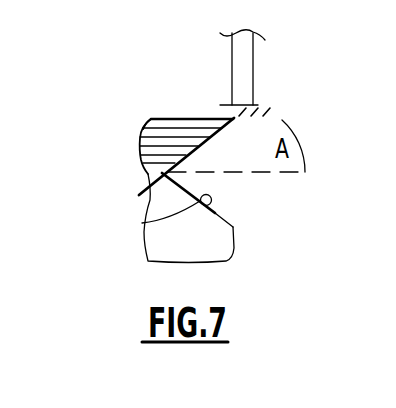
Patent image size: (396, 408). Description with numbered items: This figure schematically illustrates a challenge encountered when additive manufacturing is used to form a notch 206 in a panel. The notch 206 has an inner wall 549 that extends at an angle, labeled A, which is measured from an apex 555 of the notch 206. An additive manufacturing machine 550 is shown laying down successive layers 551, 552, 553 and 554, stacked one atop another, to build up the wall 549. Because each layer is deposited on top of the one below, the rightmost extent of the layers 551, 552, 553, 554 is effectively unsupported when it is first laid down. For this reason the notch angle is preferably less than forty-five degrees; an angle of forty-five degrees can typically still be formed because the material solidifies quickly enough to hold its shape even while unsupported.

The additive manufacturing machine 550 is at (253, 57).
The layer 554 is at (170, 117).
The layer 553 is at (146, 125).
The layer 552 is at (143, 152).
The layer 551 is at (146, 165).
The inner wall 549 is at (207, 138).
The apex 555 is at (146, 197).
The notch 206 is at (162, 218).